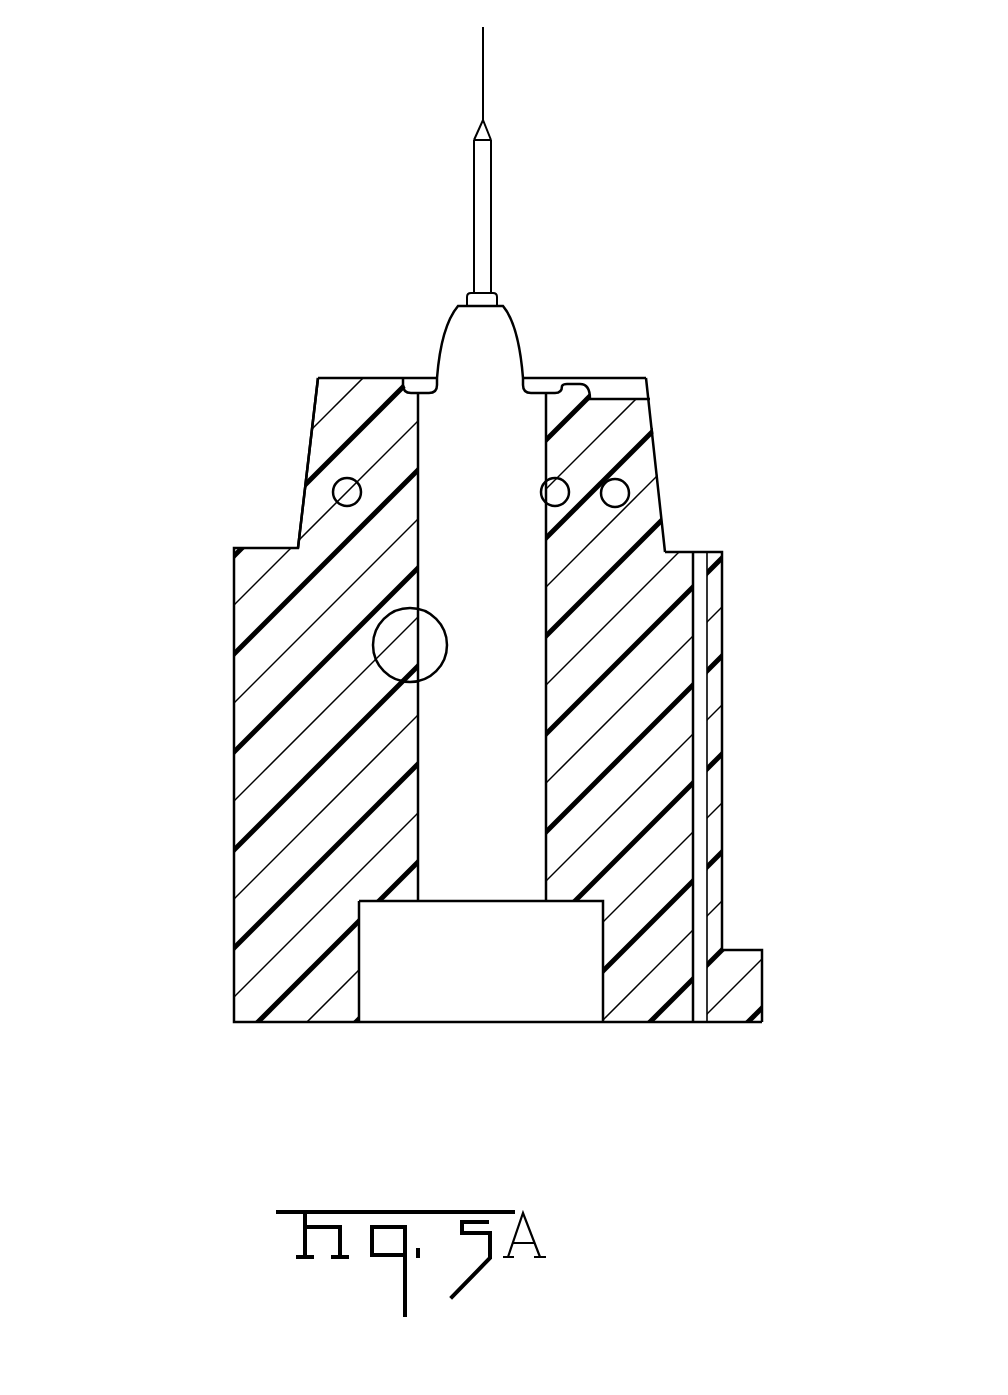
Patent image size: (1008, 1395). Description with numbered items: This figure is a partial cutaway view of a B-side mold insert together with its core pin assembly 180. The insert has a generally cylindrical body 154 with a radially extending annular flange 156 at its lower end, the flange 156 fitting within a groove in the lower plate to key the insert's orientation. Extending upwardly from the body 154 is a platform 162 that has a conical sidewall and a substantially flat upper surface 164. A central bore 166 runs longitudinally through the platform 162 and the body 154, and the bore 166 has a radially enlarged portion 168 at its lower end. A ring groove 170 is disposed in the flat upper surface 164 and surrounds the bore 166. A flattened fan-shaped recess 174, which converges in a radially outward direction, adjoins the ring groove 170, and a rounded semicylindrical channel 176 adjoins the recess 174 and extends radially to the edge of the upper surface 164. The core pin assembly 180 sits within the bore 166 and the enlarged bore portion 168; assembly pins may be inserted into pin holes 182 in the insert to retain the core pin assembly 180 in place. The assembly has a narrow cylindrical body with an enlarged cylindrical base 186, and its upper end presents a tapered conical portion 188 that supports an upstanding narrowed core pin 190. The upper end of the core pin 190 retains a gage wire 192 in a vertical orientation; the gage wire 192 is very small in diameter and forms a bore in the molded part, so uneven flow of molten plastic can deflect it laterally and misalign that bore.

The body 154 is at (235, 815).
The annular flange 156 is at (753, 950).
The platform 162 is at (308, 433).
The upper surface 164 is at (335, 376).
The central bore 166 is at (416, 680).
The radially enlarged portion 168 is at (360, 960).
The ring groove 170 is at (405, 377).
The fan-shaped recess 174 is at (572, 378).
The semicylindrical channel 176 is at (623, 397).
The core pin assembly 180 is at (455, 848).
The pin holes 182 is at (342, 490).
The enlarged cylindrical base 186 is at (577, 987).
The tapered conical portion 188 is at (470, 338).
The core pin 190 is at (478, 155).
The gage wire 192 is at (483, 78).